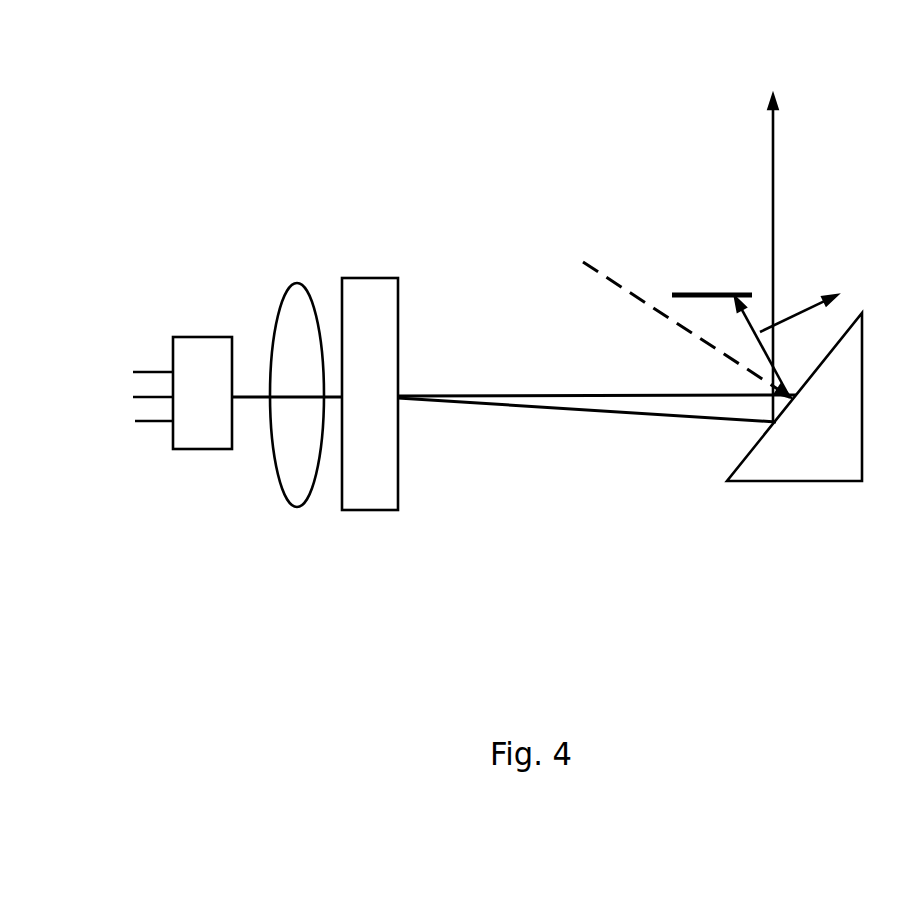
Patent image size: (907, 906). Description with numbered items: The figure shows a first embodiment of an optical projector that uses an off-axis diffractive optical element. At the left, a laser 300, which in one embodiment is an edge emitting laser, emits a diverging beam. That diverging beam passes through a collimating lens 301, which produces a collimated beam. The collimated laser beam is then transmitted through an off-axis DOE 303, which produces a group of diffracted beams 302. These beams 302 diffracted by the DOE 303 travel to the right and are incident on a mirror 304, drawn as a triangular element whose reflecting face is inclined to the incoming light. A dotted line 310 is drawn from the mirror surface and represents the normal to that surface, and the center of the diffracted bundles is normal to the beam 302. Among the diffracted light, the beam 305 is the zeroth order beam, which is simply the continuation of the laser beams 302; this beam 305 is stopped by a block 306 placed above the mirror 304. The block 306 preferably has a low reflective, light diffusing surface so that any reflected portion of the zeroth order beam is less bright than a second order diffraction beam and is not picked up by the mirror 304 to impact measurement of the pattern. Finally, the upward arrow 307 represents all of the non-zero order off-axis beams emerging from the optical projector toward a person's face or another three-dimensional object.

The laser 300 is at (166, 320).
The collimating lens 301 is at (284, 262).
The diffracted beams 302 is at (583, 391).
The off-axis DOE 303 is at (398, 510).
The mirror 304 is at (790, 482).
The 0th order beam 305 is at (831, 298).
The block 306 is at (712, 279).
The arrow 307 is at (764, 234).
The dotted line 310 is at (658, 310).